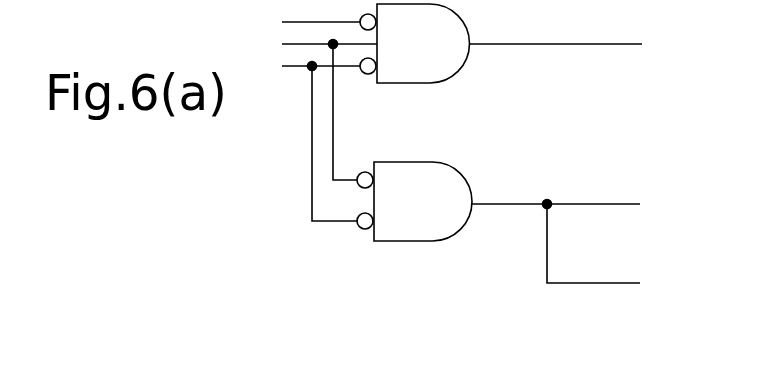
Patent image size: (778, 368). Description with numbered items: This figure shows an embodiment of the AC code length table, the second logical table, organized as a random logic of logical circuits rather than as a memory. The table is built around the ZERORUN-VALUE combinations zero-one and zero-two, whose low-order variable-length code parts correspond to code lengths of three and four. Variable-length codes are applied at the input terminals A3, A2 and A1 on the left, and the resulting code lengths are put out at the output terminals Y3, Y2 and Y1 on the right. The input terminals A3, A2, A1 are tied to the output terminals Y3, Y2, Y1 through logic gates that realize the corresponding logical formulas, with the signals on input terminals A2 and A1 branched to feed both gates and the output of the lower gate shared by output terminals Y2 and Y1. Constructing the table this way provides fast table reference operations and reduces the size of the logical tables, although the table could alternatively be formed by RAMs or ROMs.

The input terminal A1 is at (301, 137).
The input terminal A2 is at (310, 105).
The input terminal A3 is at (301, 24).
The output terminal Y1 is at (614, 257).
The output terminal Y2 is at (577, 206).
The output terminal Y3 is at (578, 51).